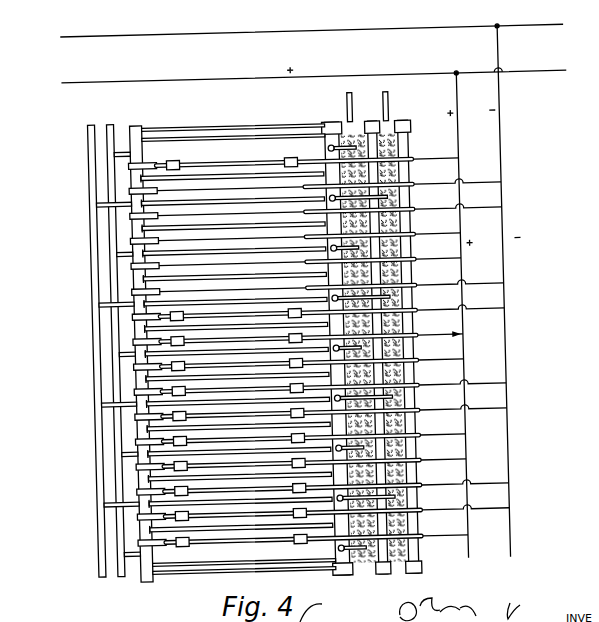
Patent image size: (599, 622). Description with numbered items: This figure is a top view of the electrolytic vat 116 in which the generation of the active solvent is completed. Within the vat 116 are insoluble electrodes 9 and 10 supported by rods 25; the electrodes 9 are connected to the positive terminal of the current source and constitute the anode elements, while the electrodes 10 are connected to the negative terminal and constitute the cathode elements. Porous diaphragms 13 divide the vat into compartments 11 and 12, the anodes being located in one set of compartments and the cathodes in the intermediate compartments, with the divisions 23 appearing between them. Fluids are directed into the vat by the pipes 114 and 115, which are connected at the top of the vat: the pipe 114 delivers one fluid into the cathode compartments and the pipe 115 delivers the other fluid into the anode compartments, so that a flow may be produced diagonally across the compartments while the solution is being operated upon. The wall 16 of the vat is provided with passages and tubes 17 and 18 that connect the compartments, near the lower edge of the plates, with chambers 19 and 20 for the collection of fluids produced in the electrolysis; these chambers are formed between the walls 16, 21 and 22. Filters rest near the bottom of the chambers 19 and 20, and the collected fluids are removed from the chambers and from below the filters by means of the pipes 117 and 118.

The insoluble electrode 9 is at (253, 256).
The insoluble electrode 10 is at (198, 206).
The compartment 11 is at (232, 200).
The compartment 12 is at (274, 253).
The porous diaphragm 13 is at (226, 171).
The wall 16 is at (334, 398).
The passage 17 is at (341, 351).
The tube 18 is at (333, 200).
The chamber 19 is at (357, 324).
The chamber 20 is at (390, 324).
The wall 21 is at (389, 249).
The wall 22 is at (408, 376).
The conductor strip 23 is at (175, 227).
The rod 25 is at (396, 160).
The pipe 114 is at (92, 222).
The pipe 115 is at (113, 165).
The vat 116 is at (236, 126).
The pipe 117 is at (352, 99).
The pipe 118 is at (398, 105).